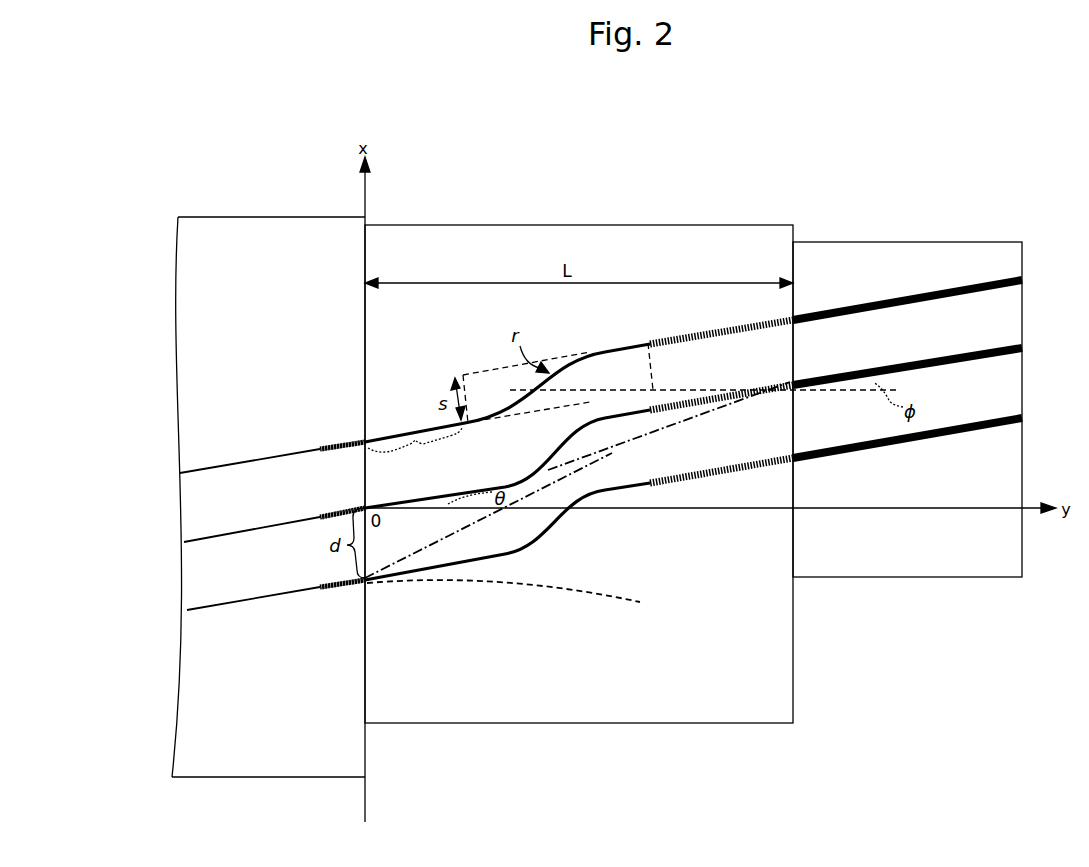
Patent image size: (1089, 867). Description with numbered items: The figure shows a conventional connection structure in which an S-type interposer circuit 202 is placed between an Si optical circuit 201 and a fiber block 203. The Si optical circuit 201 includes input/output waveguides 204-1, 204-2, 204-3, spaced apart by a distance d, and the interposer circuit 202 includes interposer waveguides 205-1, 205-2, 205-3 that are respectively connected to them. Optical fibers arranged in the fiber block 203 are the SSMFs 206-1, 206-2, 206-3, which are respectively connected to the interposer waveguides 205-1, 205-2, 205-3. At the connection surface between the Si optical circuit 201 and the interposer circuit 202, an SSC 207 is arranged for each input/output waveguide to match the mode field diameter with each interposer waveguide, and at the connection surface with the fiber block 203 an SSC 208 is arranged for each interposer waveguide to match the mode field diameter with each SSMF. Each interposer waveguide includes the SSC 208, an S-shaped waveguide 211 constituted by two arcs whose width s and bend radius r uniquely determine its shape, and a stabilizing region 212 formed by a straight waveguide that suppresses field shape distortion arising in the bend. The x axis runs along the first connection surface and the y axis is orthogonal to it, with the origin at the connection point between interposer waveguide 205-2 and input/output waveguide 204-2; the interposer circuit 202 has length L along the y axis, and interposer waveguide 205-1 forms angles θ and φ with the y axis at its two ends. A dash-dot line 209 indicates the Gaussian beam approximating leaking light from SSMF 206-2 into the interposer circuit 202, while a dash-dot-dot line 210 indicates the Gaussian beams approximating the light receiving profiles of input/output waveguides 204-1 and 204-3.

The Si optical circuit 201 is at (270, 233).
The interposer circuit 202 is at (601, 232).
The fiber block 203 is at (912, 250).
The input/output waveguide 204-1 is at (258, 461).
The input/output waveguide 204-2 is at (258, 529).
The input/output waveguide 204-3 is at (258, 598).
The interposer waveguide 205-1 is at (490, 410).
The interposer waveguide 205-2 is at (510, 482).
The interposer waveguide 205-3 is at (547, 522).
The SSMF 206-1 is at (958, 291).
The SSMF 206-2 is at (958, 357).
The SSMF 206-3 is at (958, 429).
The SSC 207 is at (351, 444).
The SSC 208 is at (686, 422).
The dash-dot line 209 is at (668, 392).
The dash-dot-dot line 210 is at (505, 588).
The S-shaped waveguide 211 is at (577, 352).
The stabilizing region 212 is at (415, 454).